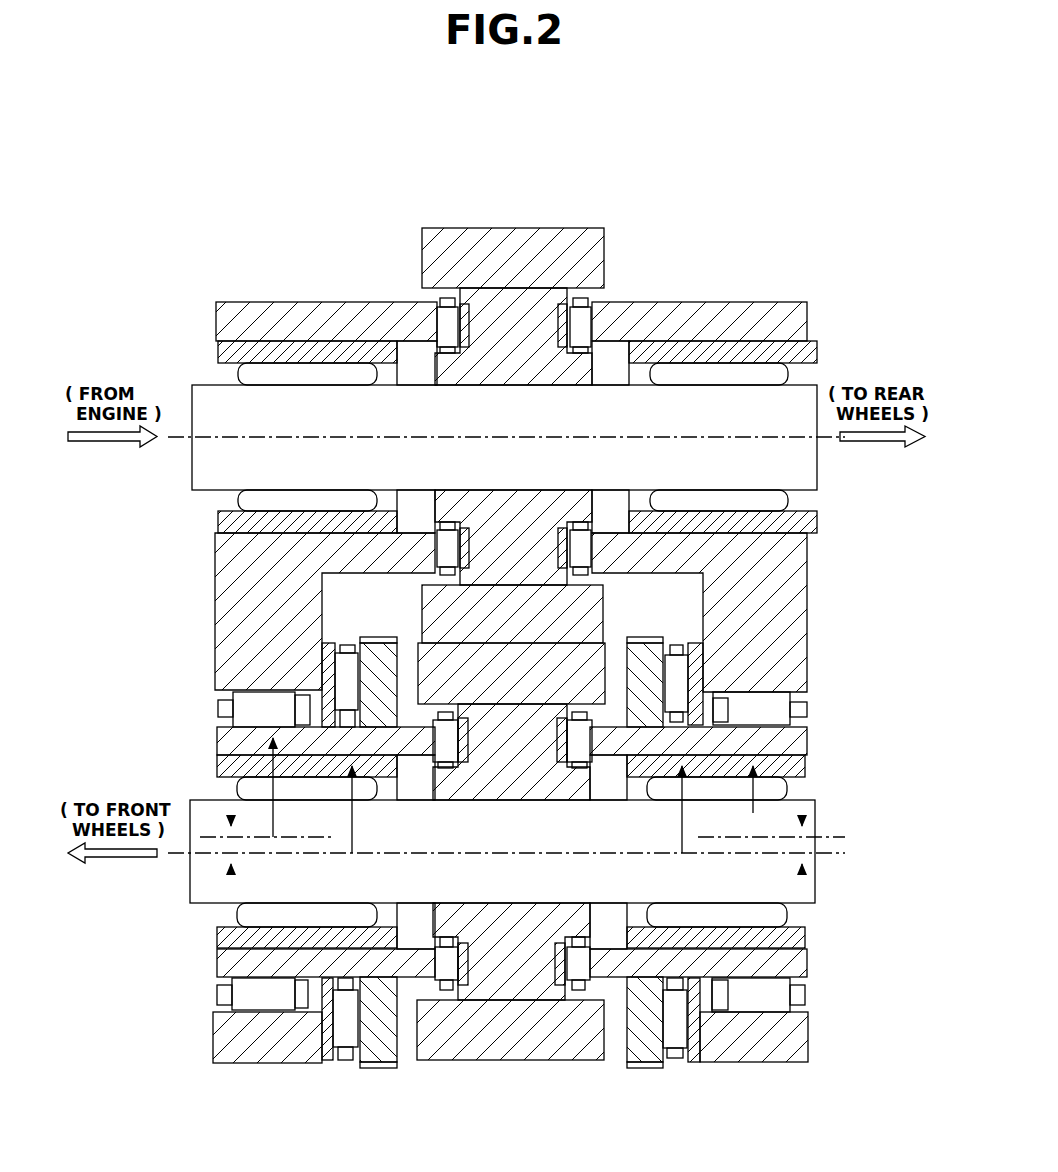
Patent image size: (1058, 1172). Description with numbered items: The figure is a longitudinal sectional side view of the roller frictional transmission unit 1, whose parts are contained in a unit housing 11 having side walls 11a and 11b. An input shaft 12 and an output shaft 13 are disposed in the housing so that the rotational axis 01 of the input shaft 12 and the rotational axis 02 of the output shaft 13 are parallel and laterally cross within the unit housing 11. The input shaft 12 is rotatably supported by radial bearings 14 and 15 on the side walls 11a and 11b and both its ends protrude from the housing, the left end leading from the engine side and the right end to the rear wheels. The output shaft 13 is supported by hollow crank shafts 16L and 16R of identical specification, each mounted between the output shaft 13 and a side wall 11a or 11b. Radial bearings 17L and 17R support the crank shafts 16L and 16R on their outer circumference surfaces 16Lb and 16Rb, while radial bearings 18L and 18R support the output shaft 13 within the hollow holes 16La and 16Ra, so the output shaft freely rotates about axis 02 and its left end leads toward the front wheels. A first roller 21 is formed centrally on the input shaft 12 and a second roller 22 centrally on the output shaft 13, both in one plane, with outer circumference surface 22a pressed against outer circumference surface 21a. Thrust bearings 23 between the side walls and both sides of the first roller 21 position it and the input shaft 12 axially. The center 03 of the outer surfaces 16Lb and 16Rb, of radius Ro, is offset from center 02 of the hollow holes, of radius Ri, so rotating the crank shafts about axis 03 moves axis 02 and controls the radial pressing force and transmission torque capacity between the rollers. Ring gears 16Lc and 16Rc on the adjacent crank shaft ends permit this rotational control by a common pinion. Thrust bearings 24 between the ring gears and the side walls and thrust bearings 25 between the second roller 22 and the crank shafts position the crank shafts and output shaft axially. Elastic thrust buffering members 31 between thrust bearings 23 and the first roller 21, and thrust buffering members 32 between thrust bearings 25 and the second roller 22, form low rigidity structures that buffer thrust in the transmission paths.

The roller frictional transmission unit 1 is at (240, 268).
The unit housing 11 is at (514, 638).
The side wall 11a is at (247, 582).
The side wall 11b is at (767, 592).
The input shaft 12 is at (205, 387).
The output shaft 13 is at (215, 906).
The radial bearing 14 is at (313, 375).
The radial bearing 15 is at (715, 375).
The crank shaft 16L is at (214, 740).
The hollow hole 16La is at (265, 757).
The outer circumference surface 16Lb is at (236, 706).
The ring gear 16Lc is at (380, 1066).
The crank shaft 16R is at (810, 742).
The hollow hole 16Ra is at (765, 760).
The outer circumference surface 16Rb is at (777, 716).
The ring gear 16Rc is at (648, 1066).
The radial bearing 17L is at (266, 703).
The radial bearing 17R is at (763, 690).
The radial bearing 18L is at (247, 788).
The radial bearing 18R is at (773, 790).
The first roller 21 is at (529, 466).
The outer circumference surface 21a is at (518, 228).
The second roller 22 is at (520, 1026).
The outer circumference surface 22a is at (513, 1062).
The thrust bearing 23 is at (577, 328).
The thrust bearing 24 is at (348, 655).
The thrust bearing 25 is at (568, 730).
The thrust buffering member 31 is at (560, 330).
The thrust buffering member 32 is at (556, 963).
The rotational axis 01 is at (688, 437).
The rotational axis 02 is at (617, 847).
The center 03 is at (290, 837).
The radius Ri is at (352, 822).
The radius Ro is at (270, 815).